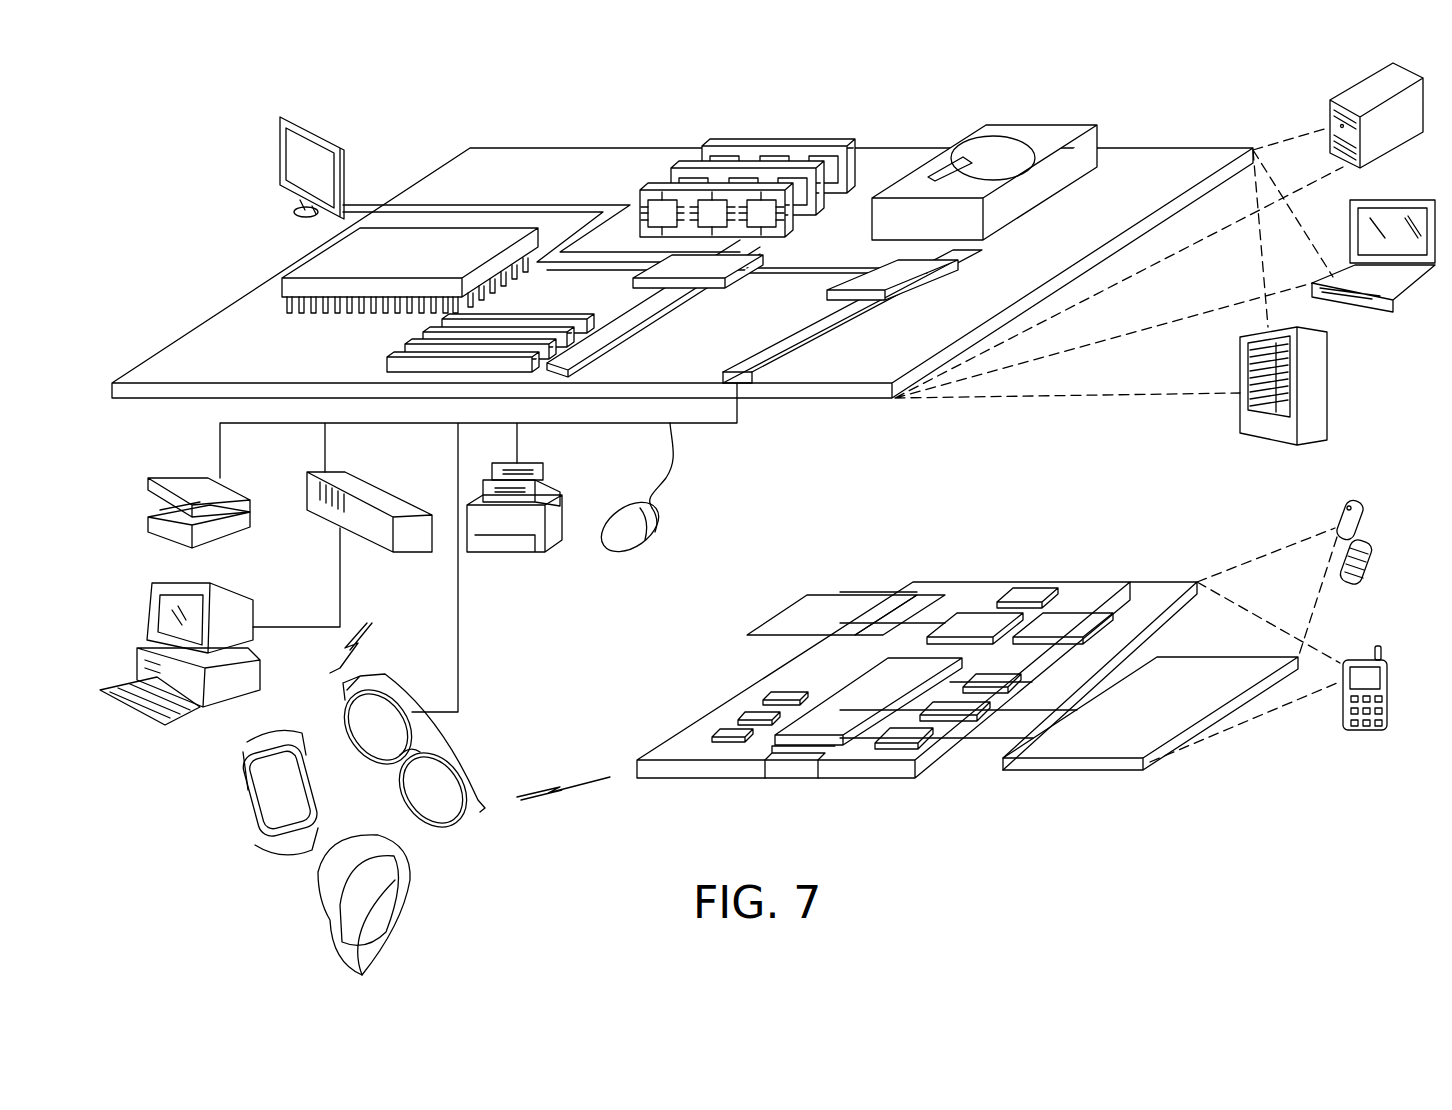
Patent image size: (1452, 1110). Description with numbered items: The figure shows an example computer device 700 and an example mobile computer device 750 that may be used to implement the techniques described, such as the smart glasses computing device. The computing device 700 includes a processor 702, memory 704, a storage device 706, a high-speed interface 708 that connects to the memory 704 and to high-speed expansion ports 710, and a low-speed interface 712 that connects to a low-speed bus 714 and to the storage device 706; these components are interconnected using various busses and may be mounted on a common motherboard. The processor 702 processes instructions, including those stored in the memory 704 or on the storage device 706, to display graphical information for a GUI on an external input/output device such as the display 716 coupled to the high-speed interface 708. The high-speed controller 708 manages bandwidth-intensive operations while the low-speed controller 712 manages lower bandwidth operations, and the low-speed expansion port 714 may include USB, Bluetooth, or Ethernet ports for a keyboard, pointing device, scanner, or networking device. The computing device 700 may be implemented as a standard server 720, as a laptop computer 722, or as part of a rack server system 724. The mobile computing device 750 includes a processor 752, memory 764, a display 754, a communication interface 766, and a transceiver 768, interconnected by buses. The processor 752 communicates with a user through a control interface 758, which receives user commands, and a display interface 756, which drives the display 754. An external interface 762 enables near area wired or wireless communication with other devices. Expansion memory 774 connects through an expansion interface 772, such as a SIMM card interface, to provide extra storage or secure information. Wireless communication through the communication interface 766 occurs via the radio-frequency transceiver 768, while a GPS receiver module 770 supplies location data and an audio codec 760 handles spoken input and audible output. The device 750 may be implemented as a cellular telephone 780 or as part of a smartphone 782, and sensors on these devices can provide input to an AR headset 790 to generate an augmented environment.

The computing device 700 is at (743, 513).
The processor 702 is at (307, 257).
The memory 704 is at (782, 142).
The storage device 706 is at (1030, 124).
The high-speed interface 708 is at (713, 262).
The high-speed expansion ports 710 is at (413, 342).
The low-speed interface 712 is at (865, 268).
The low-speed bus 714 is at (745, 367).
The display 716 is at (285, 113).
The standard server 720 is at (1352, 93).
The laptop computer 722 is at (1412, 200).
The rack server system 724 is at (1327, 383).
The mobile computer device 750 is at (683, 665).
The processor 752 is at (833, 708).
The display 754 is at (1195, 668).
The display interface 756 is at (932, 735).
The control interface 758 is at (958, 703).
The audio codec 760 is at (998, 672).
The external interface 762 is at (793, 762).
The memory 764 is at (740, 712).
The communication interface 766 is at (973, 617).
The transceiver 768 is at (1072, 617).
The GPS receiver module 770 is at (1028, 593).
The expansion interface 772 is at (895, 595).
The expansion memory 774 is at (807, 595).
The cellular telephone 780 is at (1350, 500).
The smartphone 782 is at (1358, 658).
The AR headset 790 is at (462, 826).